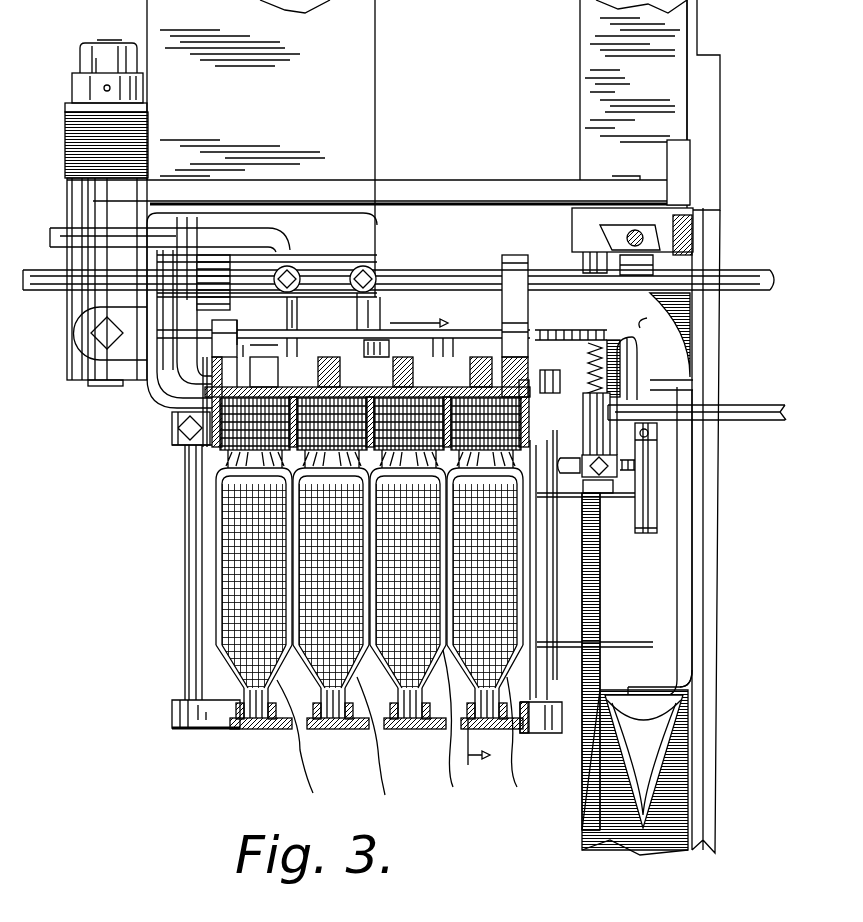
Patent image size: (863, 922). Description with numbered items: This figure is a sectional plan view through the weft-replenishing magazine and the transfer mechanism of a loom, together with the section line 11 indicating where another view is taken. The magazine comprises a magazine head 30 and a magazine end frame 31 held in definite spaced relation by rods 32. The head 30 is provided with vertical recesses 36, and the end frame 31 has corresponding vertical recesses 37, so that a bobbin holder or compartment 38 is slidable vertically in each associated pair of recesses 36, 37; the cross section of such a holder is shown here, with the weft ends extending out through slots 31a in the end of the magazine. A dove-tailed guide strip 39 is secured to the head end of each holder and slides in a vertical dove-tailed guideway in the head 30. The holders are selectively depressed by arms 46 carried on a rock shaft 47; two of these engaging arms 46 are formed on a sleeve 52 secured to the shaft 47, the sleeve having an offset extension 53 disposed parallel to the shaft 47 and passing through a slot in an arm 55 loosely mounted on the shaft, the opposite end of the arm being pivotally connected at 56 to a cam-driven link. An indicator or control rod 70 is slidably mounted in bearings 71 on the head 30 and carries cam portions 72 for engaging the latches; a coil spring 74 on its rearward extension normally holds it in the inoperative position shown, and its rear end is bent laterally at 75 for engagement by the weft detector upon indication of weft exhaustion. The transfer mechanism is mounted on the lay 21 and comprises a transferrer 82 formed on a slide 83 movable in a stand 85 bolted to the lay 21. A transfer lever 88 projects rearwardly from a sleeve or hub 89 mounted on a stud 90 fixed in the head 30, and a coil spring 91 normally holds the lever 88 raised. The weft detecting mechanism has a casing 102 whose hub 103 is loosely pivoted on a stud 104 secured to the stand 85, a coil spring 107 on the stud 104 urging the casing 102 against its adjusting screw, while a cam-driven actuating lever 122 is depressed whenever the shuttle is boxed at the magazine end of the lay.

The lay 21 is at (584, 115).
The transfer lever 88 is at (378, 180).
The slide 83 is at (690, 229).
The stand 85 is at (616, 241).
The stud 90 is at (108, 40).
The coil spring 91 is at (66, 135).
The sleeve or hub 89 is at (80, 193).
The offset extension 53 is at (52, 234).
The pivotal connection 56 is at (208, 376).
The arm 55 is at (183, 222).
The sleeve 52 is at (385, 266).
The rock shaft 47 is at (728, 291).
The engaging arm 46 is at (398, 293).
The indicator or control rod 70 is at (420, 331).
The cam portion 72 is at (462, 343).
The bearing 71 is at (226, 326).
The dove-tailed guide strip 39 is at (260, 353).
The coil spring 74 is at (571, 322).
The coil spring 107 is at (590, 360).
The stud 104 is at (588, 384).
The hub or bearing portion 103 is at (584, 436).
The casing 102 is at (645, 534).
The actuating lever 122 is at (752, 418).
The laterally bent end 75 is at (643, 376).
The transferrer 82 is at (655, 325).
The bobbin holder or compartment 38 is at (216, 530).
The vertical recess 37 is at (290, 730).
The rod 32 is at (186, 622).
The magazine head 30 is at (214, 394).
The vertical recess 36 is at (186, 449).
The magazine end frame 31 is at (232, 730).
The slot 31a is at (284, 690).
The section line 11 is at (397, 722).